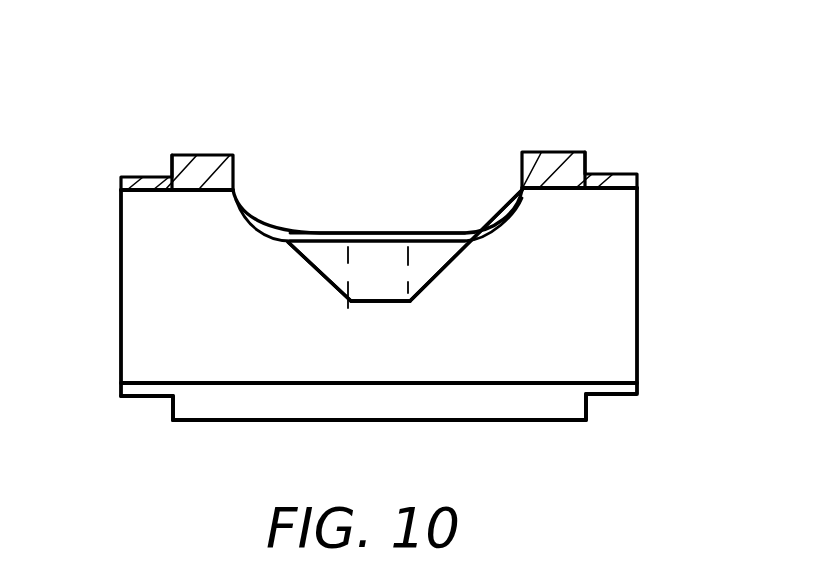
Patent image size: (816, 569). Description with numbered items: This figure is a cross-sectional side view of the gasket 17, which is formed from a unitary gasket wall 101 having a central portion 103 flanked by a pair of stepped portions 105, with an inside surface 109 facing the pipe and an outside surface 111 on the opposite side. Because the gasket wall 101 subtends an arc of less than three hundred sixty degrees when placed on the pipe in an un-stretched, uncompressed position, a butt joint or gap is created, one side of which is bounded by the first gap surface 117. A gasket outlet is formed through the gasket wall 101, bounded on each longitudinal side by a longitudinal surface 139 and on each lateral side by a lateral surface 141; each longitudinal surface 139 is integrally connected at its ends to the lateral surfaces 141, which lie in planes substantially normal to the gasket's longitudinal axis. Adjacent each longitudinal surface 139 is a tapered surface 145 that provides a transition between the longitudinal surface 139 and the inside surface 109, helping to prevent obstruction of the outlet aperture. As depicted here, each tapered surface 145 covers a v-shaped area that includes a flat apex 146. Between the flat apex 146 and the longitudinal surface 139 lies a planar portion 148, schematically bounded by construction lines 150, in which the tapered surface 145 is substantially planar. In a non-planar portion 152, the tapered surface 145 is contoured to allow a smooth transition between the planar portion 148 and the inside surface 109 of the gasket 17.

The gasket 17 is at (511, 64).
The gasket wall 101 is at (200, 163).
The central portion 103 is at (543, 142).
The stepped portions 105 is at (122, 167).
The inside surface 109 is at (165, 193).
The outside surface 111 is at (547, 420).
The first gap surface 117 is at (233, 405).
The longitudinal surface 139 is at (473, 226).
The lateral surface 141 is at (522, 162).
The tapered surface 145 is at (432, 270).
The flat apex 146 is at (387, 300).
The planar portion 148 is at (363, 282).
The construction lines 150 is at (347, 260).
The non-planar portion 152 is at (320, 262).